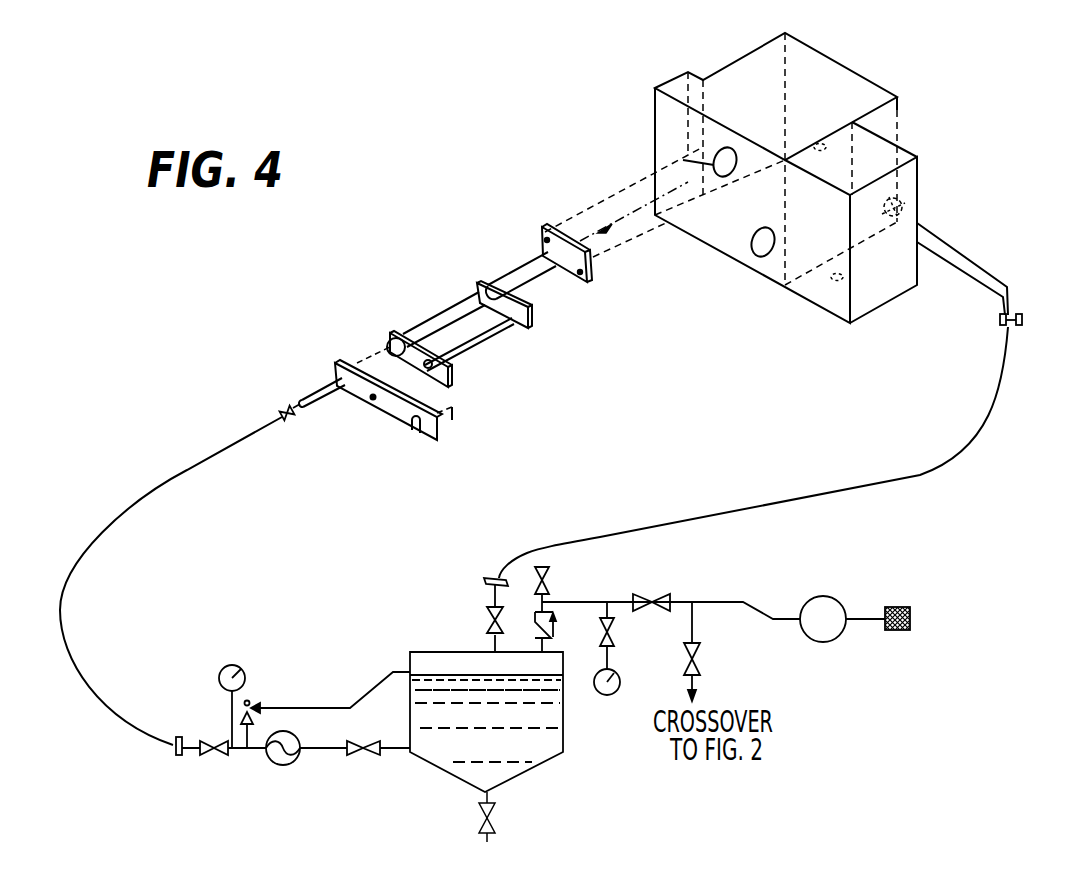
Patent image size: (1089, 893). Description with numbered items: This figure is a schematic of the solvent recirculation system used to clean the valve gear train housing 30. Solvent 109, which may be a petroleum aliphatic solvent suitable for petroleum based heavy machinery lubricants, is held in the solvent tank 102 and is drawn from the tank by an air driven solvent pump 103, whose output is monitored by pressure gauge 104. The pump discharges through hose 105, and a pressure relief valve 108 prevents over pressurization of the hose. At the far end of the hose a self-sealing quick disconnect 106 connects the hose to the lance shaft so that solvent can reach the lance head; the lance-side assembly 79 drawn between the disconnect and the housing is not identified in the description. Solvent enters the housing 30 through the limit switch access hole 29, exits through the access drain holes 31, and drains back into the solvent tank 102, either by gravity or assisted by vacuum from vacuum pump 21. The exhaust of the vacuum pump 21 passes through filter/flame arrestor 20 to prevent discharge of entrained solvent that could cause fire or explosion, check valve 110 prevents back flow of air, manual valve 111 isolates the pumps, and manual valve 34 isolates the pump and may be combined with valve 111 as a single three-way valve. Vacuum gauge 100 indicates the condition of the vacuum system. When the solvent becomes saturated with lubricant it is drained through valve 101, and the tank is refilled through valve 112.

The filter/flame arrestor 20 is at (911, 619).
The vacuum pump 21 is at (842, 628).
The limit switch access hole 29 is at (752, 238).
The valve gear train housing 30 is at (725, 68).
The access drain holes 31 is at (920, 217).
The manual valve 34 is at (698, 657).
The cylinder assembly 79 is at (413, 330).
The vacuum gauge 100 is at (613, 697).
The valve 101 is at (1017, 316).
The solvent tank 102 is at (433, 767).
The air driven solvent pump 103 is at (266, 755).
The pressure gauge 104 is at (222, 672).
The hose 105 is at (192, 467).
The self-sealing quick disconnect 106 is at (283, 408).
The pressure relief valve 108 is at (258, 703).
The solvent 109 is at (540, 749).
The check valve 110 is at (560, 605).
The manual valve 111 is at (668, 602).
The valve 112 is at (485, 612).